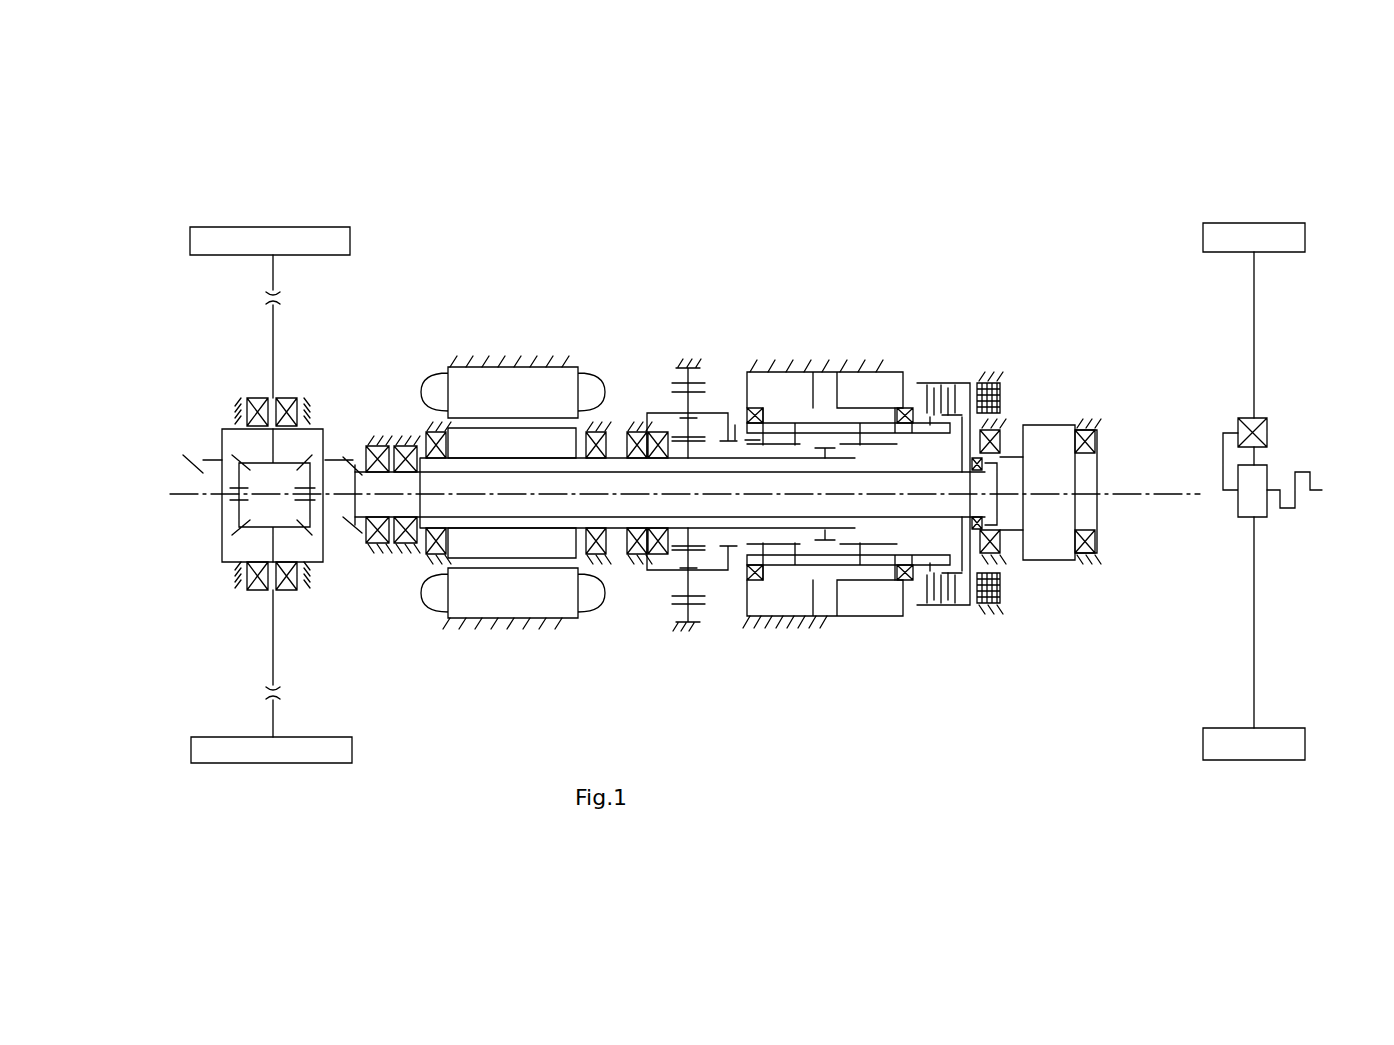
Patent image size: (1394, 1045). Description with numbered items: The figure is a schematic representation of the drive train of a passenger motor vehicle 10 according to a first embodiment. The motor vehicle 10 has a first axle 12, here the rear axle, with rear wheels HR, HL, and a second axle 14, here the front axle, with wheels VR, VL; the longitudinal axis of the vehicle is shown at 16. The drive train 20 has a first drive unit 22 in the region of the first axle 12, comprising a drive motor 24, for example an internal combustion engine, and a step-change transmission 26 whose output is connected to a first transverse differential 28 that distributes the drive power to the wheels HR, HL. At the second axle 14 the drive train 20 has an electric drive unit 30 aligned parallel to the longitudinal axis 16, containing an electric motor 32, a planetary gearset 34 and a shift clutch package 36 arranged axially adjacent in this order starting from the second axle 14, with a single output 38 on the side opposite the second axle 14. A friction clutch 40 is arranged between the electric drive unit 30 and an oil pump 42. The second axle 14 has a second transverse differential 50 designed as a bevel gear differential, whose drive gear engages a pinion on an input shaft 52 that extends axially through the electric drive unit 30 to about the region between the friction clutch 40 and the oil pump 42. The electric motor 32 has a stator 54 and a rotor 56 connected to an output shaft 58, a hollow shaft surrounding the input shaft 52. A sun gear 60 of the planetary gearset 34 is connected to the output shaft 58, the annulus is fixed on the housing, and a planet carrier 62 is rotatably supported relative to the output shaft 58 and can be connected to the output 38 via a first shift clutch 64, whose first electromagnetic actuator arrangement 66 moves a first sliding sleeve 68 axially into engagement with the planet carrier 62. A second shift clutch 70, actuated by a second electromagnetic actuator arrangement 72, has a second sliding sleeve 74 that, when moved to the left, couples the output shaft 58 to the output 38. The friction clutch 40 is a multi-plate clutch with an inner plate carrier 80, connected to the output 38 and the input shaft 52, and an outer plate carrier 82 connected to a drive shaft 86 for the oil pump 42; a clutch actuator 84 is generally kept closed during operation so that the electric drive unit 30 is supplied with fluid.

The motor vehicle 10 is at (1115, 230).
The first axle 12 is at (1292, 488).
The second axle 14 is at (275, 473).
The longitudinal axis 16 is at (1140, 492).
The drive train 20 is at (1024, 225).
The first drive unit 22 is at (1261, 486).
The drive motor 24 is at (1292, 510).
The step-change transmission 26 is at (1238, 508).
The first transverse differential 28 is at (1267, 440).
The electric drive unit 30 is at (820, 260).
The electric motor 32 is at (546, 440).
The planetary gearset 34 is at (675, 446).
The shift clutch package 36 is at (846, 470).
The output 38 is at (903, 568).
The friction clutch 40 is at (1012, 471).
The oil pump 42 is at (1050, 425).
The second transverse differential 50 is at (222, 443).
The input shaft 52 is at (355, 486).
The stator 54 is at (472, 388).
The rotor 56 is at (483, 540).
The output shaft 58 is at (620, 452).
The sun gear 60 is at (692, 532).
The planet carrier 62 is at (660, 570).
The first shift clutch 64 is at (738, 430).
The first electromagnetic actuator arrangement 66 is at (772, 383).
The first sliding sleeve 68 is at (783, 443).
The second shift clutch 70 is at (828, 545).
The second electromagnetic actuator arrangement 72 is at (865, 600).
The second sliding sleeve 74 is at (875, 447).
The inner plate carrier 80 is at (958, 568).
The outer plate carrier 82 is at (963, 383).
The clutch actuator 84 is at (1000, 395).
The drive shaft 86 is at (1008, 458).
The front wheel VR is at (240, 240).
The front wheel VL is at (272, 750).
The rear wheel HR is at (1288, 237).
The rear wheel HL is at (1258, 760).